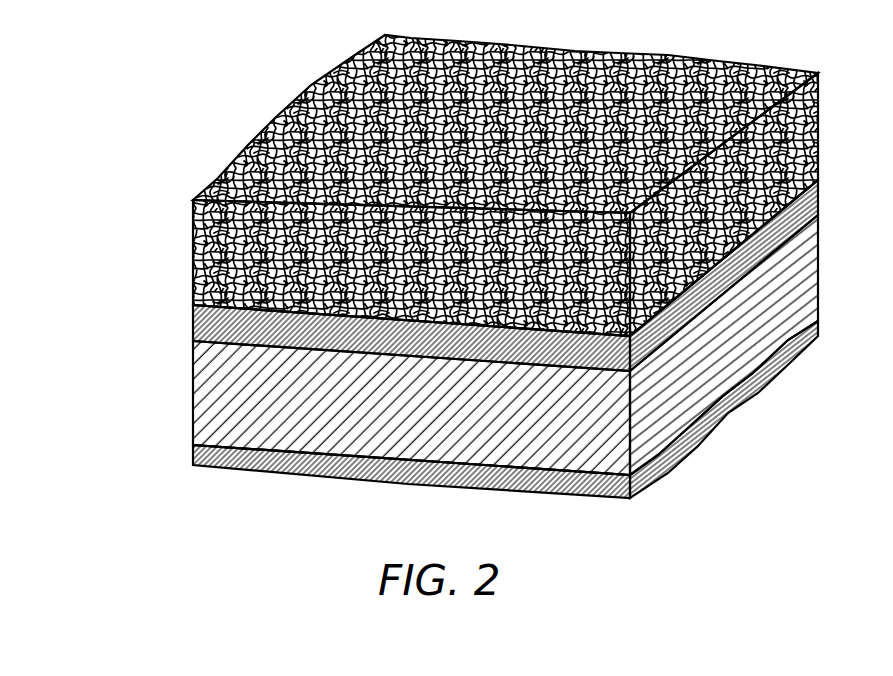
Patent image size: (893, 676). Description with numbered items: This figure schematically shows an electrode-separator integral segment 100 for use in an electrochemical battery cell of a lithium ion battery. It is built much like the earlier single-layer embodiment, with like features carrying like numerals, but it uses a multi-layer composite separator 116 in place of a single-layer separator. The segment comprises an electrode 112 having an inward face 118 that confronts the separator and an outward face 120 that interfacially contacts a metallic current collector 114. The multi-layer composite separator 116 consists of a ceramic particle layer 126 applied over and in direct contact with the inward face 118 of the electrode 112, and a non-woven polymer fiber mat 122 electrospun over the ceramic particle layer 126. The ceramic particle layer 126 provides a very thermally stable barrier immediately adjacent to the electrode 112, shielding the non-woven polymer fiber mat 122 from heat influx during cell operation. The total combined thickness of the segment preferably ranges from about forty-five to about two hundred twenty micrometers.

The electrode-separator integral segment 100 is at (127, 143).
The multi-layer composite separator 116 is at (126, 233).
The non-woven polymer fiber mat 122 is at (185, 228).
The ceramic particle layer 126 is at (185, 308).
The inward face of the electrode 118 is at (207, 332).
The electrode 112 is at (185, 398).
The outward face of the electrode 120 is at (245, 440).
The metallic current collector 114 is at (185, 443).